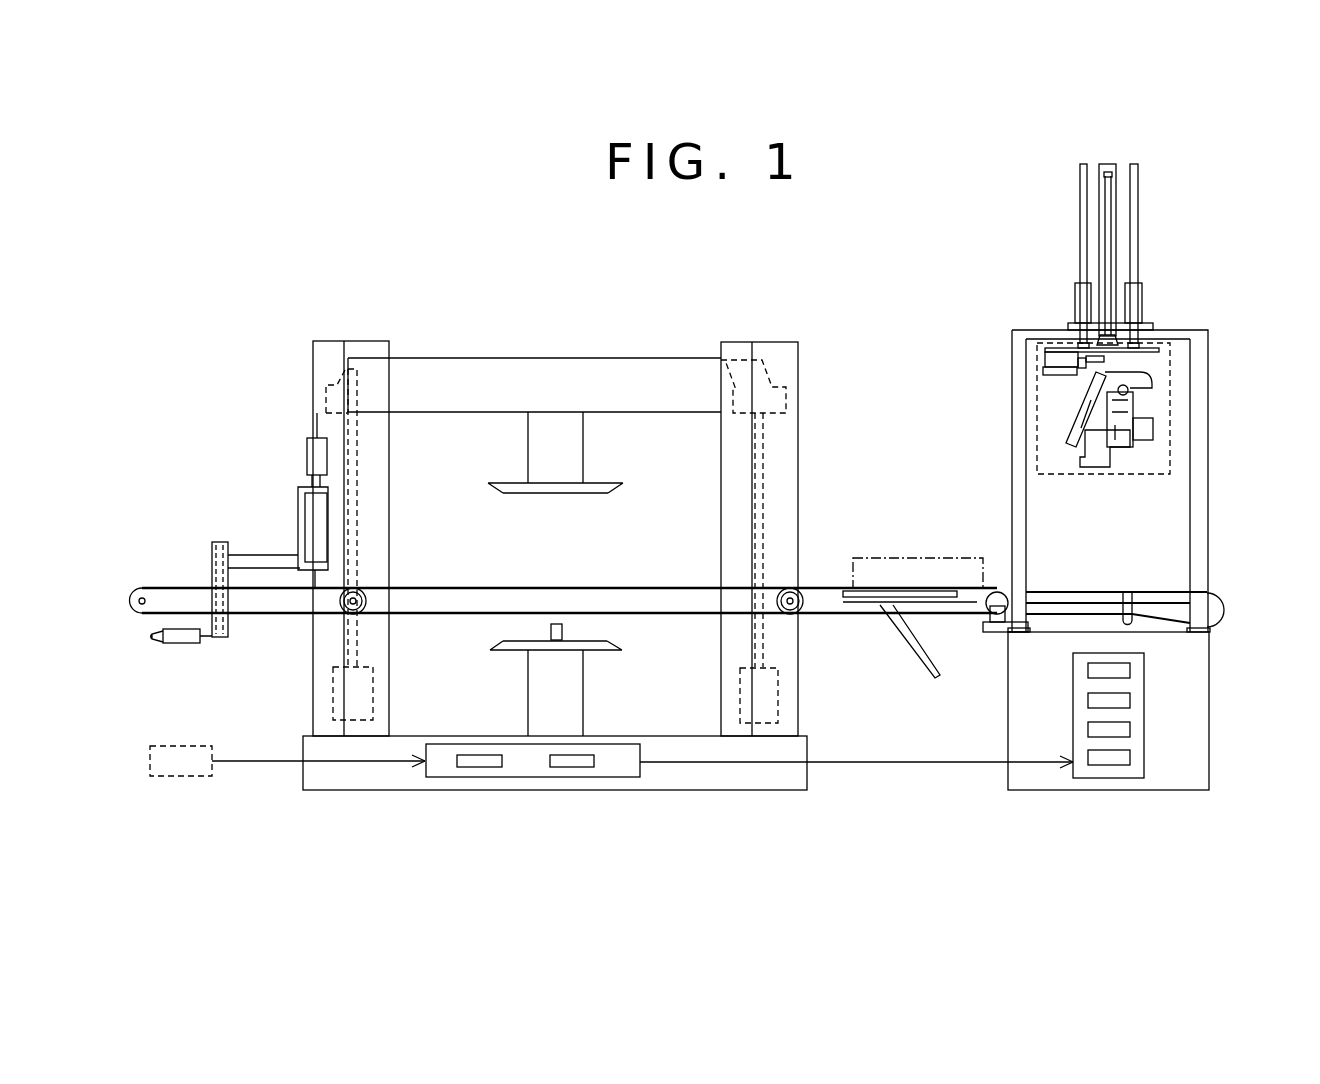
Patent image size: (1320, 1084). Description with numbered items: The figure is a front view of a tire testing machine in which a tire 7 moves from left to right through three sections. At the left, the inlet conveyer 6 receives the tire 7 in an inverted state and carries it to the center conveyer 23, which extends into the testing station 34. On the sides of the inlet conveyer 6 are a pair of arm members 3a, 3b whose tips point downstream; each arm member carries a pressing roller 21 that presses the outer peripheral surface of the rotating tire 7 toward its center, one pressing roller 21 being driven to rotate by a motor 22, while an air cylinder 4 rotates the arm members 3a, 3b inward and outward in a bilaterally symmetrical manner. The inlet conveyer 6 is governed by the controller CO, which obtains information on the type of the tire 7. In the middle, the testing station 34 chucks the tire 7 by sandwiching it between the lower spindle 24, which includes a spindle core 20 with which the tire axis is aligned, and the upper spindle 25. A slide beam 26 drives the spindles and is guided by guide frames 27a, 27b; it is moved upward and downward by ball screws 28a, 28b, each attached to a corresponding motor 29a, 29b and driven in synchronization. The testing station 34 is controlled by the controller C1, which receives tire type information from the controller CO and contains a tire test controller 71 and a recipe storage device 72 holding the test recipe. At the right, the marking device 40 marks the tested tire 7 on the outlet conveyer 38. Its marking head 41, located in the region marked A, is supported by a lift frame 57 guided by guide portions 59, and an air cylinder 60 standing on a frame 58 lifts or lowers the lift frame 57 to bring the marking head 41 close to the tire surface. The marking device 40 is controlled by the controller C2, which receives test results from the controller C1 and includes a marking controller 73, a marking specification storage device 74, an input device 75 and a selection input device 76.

The testing station 34 is at (542, 320).
The slide beam 26 is at (650, 358).
The guide frame 27a is at (330, 348).
The guide frame 27b is at (780, 350).
The ball screw 28a is at (343, 422).
The ball screw 28b is at (767, 436).
The motor 29a is at (333, 697).
The motor 29b is at (778, 690).
The upper spindle 25 is at (580, 449).
The lower spindle 24 is at (575, 697).
The spindle core 20 is at (565, 628).
The center conveyer 23 is at (622, 588).
The inlet conveyer 6 is at (190, 588).
The arm member 3a is at (249, 555).
The arm member 3b is at (250, 595).
The pressing roller 21 is at (322, 528).
The motor 22 is at (307, 458).
The air cylinder 4 is at (177, 645).
The tire 7 is at (903, 558).
The marking device 40 is at (1215, 283).
The guide portions 59 is at (1080, 228).
The air cylinder 60 is at (1116, 186).
The frame 58 is at (1200, 487).
The region A is at (1040, 420).
The lift frame 57 is at (1045, 350).
The marking head 41 is at (1148, 407).
The outlet conveyer 38 is at (1162, 591).
The controller C2 is at (1110, 778).
The marking controller 73 is at (1131, 670).
The marking specification storage device 74 is at (1131, 699).
The input device 75 is at (1131, 728).
The selection input device 76 is at (1131, 756).
The controller C1 is at (437, 777).
The tire test controller 71 is at (490, 767).
The recipe storage device 72 is at (572, 767).
The controller CO is at (287, 761).